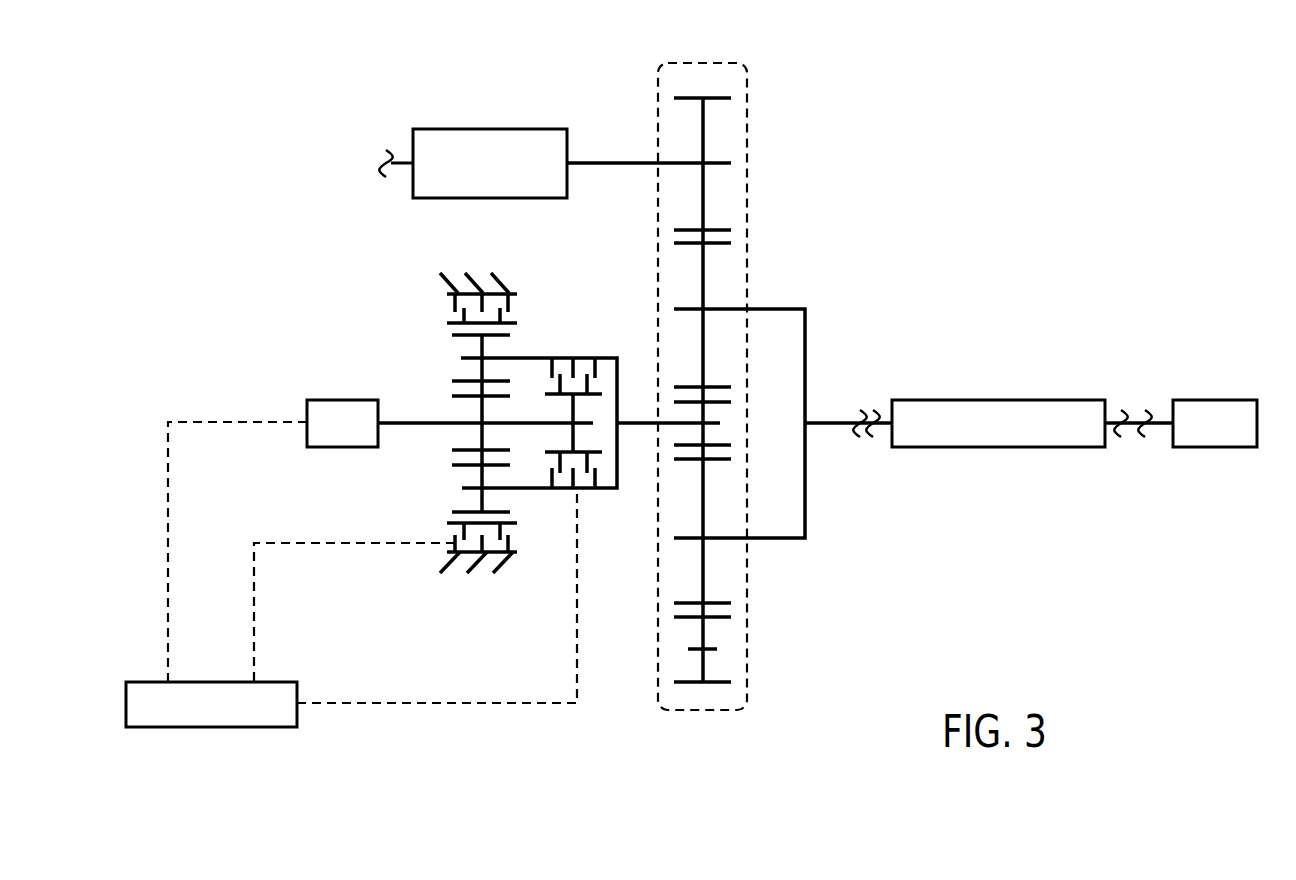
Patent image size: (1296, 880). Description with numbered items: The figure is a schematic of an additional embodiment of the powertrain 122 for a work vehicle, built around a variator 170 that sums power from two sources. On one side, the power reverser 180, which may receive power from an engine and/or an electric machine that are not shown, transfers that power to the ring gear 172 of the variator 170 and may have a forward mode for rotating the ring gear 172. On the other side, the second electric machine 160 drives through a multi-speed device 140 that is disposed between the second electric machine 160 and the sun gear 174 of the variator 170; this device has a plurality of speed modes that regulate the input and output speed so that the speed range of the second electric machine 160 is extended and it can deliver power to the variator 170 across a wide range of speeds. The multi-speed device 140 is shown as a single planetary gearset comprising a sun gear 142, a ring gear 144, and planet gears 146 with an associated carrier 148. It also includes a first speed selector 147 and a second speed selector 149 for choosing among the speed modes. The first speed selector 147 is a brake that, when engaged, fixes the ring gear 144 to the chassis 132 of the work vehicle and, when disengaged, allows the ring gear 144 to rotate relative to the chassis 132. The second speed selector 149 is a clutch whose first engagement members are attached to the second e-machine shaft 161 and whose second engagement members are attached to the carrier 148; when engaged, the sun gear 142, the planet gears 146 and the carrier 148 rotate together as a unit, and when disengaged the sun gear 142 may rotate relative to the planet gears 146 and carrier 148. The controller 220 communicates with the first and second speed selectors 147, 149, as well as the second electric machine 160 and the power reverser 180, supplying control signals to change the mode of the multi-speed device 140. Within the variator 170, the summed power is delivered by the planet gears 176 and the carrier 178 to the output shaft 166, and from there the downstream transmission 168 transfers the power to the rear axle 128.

The powertrain 122 is at (250, 218).
The rear axle 128 is at (1222, 447).
The chassis 132 is at (509, 289).
The multi-speed device 140 is at (390, 325).
The sun gear 142 is at (468, 450).
The ring gear 144 is at (512, 533).
The planet gears 146 is at (500, 340).
The first speed selector 147 is at (440, 308).
The carrier 148 is at (588, 490).
The second speed selector 149 is at (525, 470).
The second electric machine 160 is at (342, 398).
The second e-machine shaft 161 is at (428, 421).
The output shaft 166 is at (818, 405).
The transmission 168 is at (1000, 400).
The variator 170 is at (750, 92).
The ring gear 172 is at (705, 128).
The sun gear 174 is at (713, 403).
The planet gears 176 is at (703, 497).
The carrier 178 is at (767, 308).
The power reverser 180 is at (490, 118).
The controller 220 is at (212, 730).